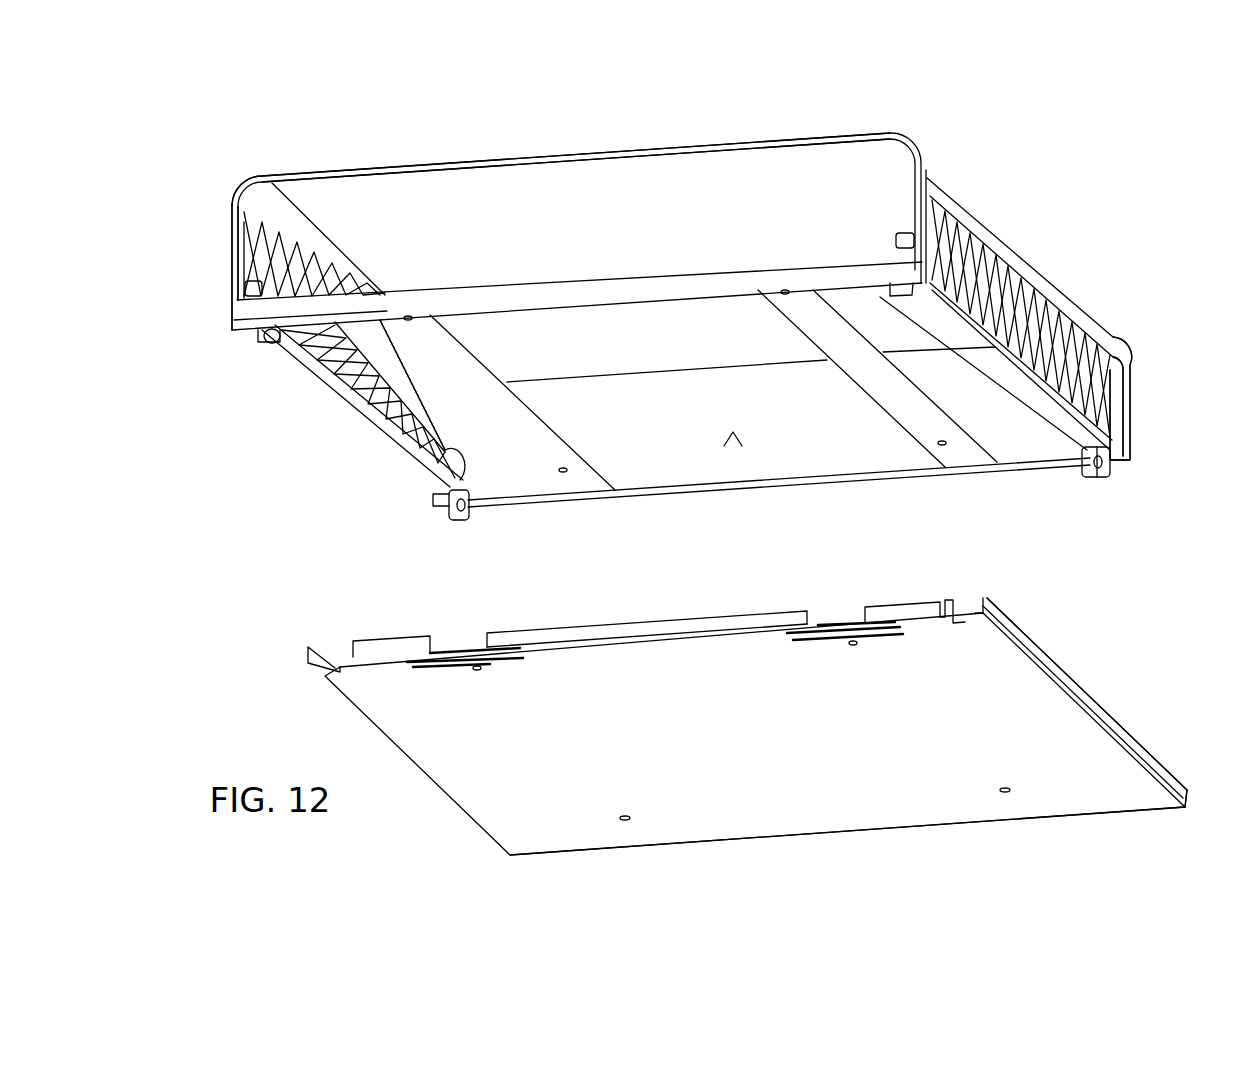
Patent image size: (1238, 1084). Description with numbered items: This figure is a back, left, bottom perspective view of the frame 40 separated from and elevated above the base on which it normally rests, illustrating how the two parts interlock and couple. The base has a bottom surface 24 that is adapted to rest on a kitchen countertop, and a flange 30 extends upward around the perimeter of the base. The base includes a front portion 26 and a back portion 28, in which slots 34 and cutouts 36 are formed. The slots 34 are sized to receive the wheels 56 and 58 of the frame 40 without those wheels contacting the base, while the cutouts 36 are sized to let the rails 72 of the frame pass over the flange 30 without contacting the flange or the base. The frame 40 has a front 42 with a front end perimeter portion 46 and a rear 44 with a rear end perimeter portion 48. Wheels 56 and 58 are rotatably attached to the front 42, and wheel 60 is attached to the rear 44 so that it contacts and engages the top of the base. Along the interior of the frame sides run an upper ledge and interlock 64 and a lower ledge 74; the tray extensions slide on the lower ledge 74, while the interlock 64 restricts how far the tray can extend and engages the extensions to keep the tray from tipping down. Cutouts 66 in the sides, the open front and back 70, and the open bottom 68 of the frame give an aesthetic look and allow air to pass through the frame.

The bottom surface 24 is at (490, 782).
The front portion 26 is at (665, 628).
The back portion 28 is at (848, 833).
The flange 30 is at (1080, 698).
The slots 34 is at (342, 658).
The cutouts 36 is at (833, 618).
The frame 40 is at (980, 220).
The front 42 is at (565, 207).
The rear 44 is at (842, 435).
The front end perimeter portion 46 is at (232, 228).
The rear end perimeter portion 48 is at (1133, 397).
The wheel 56 is at (893, 273).
The wheel 58 is at (263, 347).
The wheel 60 is at (450, 522).
The upper ledge and interlock 64 is at (235, 308).
The cutouts 66 is at (1043, 297).
The open bottom 68 is at (733, 432).
The open front and back 70 is at (398, 192).
The rails 72 is at (517, 437).
The lower ledge 74 is at (347, 377).